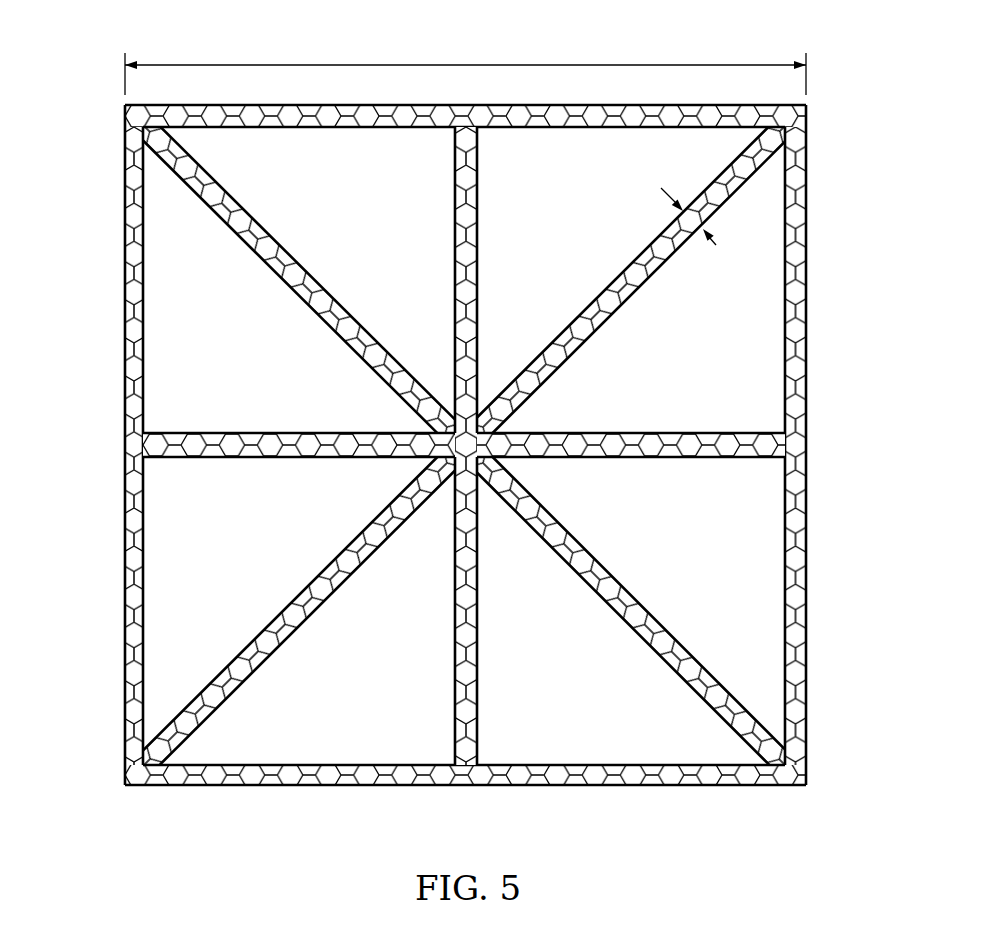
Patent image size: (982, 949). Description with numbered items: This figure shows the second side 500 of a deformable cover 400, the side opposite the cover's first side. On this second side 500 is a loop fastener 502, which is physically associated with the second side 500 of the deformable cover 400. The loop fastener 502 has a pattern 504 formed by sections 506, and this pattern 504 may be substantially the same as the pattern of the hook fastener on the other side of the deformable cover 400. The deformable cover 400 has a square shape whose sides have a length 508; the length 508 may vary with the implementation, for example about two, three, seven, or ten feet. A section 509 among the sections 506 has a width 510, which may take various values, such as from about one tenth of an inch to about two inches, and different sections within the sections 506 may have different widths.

The deformable cover 400 is at (464, 446).
The second side 500 is at (464, 475).
The loop fastener 502 is at (632, 786).
The pattern 504 is at (812, 611).
The sections 506 is at (106, 262).
The length 508 is at (465, 55).
The section 509 is at (622, 277).
The width 510 is at (714, 243).